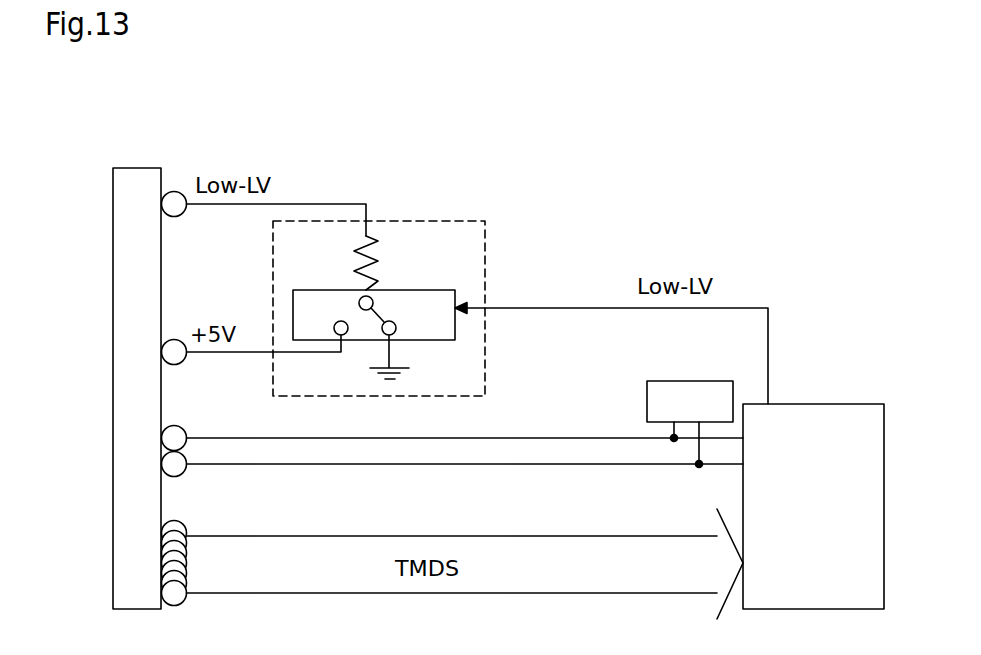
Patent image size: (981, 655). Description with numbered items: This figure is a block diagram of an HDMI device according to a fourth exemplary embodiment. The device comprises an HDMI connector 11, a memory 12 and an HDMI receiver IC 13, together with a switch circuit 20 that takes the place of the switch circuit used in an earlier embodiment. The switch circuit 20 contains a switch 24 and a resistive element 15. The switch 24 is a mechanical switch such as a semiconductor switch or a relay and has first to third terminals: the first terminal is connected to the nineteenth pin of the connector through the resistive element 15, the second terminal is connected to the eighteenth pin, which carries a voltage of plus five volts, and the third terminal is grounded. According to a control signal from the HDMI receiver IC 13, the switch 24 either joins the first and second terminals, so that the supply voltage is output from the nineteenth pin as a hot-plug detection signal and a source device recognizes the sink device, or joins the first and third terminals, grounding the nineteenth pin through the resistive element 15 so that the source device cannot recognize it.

The HDMI connector 11 is at (139, 168).
The memory 12 is at (688, 381).
The HDMI receiver IC 13 is at (805, 404).
The resistive element 15 is at (348, 262).
The switch circuit 20 is at (485, 263).
The switch 24 is at (395, 290).